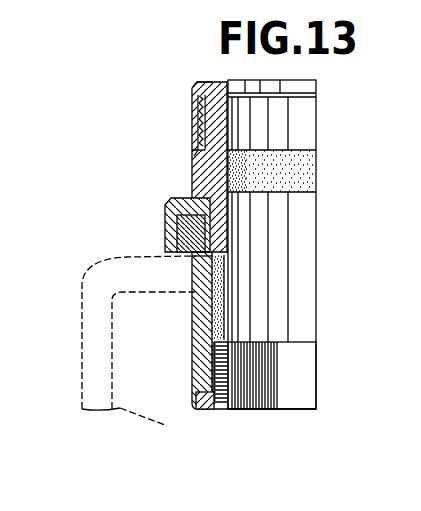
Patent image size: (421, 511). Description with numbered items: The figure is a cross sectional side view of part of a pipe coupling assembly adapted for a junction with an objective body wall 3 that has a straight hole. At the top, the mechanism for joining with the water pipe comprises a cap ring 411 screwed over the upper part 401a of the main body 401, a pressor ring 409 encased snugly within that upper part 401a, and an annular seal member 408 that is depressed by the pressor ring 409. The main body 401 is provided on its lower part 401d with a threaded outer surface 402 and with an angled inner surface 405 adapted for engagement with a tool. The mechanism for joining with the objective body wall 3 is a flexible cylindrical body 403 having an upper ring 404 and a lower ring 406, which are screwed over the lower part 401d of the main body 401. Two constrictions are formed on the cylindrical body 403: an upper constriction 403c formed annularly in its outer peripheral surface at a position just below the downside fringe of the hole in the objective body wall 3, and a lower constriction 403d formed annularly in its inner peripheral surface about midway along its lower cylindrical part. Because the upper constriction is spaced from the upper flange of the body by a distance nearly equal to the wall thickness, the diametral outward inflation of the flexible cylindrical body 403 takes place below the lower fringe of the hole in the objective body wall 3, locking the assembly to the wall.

The objective body wall 3 is at (88, 282).
The main body 401 is at (207, 180).
The upper part of the main body 401a is at (192, 104).
The lower part of the main body 401d is at (178, 244).
The threaded outer surface 402 is at (212, 325).
The flexible cylindrical body 403 is at (193, 350).
The upper constriction 403c is at (197, 292).
The lower constriction 403d is at (190, 372).
The upper ring 404 is at (168, 205).
The angled inner surface 405 is at (298, 410).
The lower ring 406 is at (208, 410).
The annular seal member 408 is at (196, 154).
The pressor ring 409 is at (200, 137).
The cap ring 411 is at (205, 80).